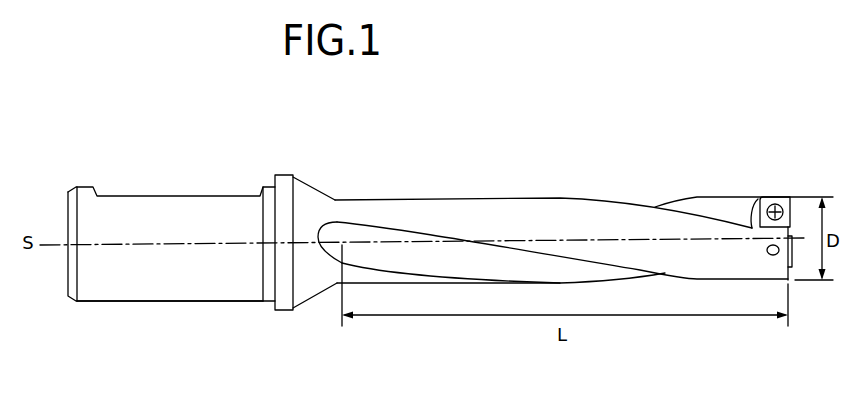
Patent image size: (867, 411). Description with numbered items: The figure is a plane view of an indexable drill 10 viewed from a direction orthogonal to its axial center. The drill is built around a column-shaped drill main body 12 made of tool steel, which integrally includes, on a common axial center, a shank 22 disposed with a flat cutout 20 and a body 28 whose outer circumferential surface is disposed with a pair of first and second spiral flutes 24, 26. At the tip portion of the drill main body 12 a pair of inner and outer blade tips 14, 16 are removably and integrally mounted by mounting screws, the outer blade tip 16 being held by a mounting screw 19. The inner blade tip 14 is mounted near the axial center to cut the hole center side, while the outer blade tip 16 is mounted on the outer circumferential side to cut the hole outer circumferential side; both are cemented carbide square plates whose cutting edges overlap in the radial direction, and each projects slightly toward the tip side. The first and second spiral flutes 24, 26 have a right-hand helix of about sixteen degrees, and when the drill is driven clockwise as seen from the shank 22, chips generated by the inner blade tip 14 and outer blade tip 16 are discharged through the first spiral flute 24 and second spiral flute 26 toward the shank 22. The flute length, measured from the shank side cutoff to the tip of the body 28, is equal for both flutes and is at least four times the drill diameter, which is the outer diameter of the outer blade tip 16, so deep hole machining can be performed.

The indexable drill 10 is at (625, 108).
The drill main body 12 is at (368, 342).
The inner blade tip 14 is at (792, 262).
The outer blade tip 16 is at (788, 202).
The mounting screw 19 is at (770, 205).
The flat cutout 20 is at (163, 190).
The shank 22 is at (168, 285).
The first spiral flute 24 is at (475, 265).
The second spiral flute 26 is at (718, 212).
The body 28 is at (485, 215).